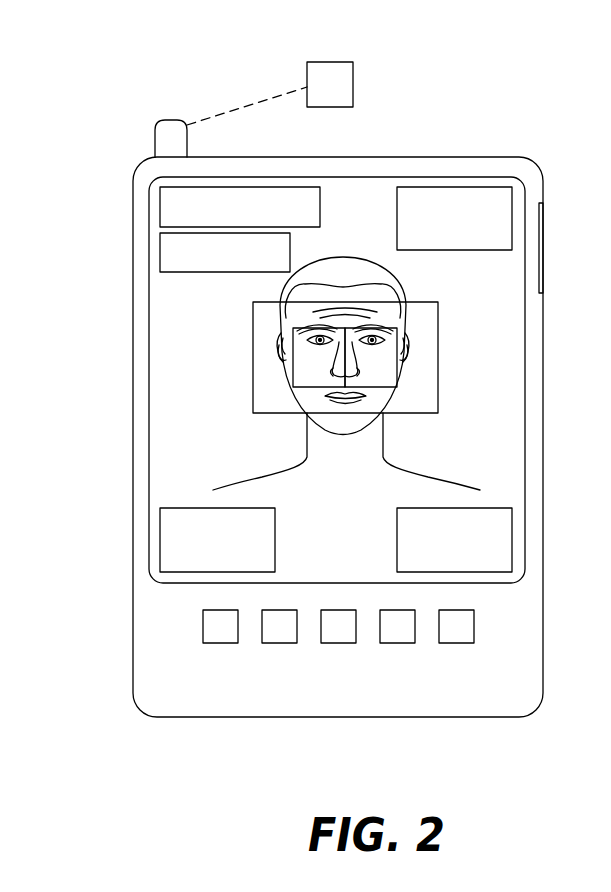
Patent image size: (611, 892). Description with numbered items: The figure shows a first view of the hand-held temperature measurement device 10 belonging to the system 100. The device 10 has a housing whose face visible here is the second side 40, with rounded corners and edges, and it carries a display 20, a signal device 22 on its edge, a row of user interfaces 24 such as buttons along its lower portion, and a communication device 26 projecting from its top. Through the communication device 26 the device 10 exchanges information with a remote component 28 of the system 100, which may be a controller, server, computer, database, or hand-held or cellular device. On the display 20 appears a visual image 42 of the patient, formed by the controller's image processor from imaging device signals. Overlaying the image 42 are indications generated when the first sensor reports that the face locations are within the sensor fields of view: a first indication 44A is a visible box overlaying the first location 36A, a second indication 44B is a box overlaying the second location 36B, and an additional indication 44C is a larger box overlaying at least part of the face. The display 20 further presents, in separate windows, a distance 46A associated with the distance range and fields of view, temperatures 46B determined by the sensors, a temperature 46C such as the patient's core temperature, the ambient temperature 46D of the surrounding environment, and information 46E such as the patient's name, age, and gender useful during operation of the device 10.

The system 100 is at (118, 85).
The temperature measurement device 10 is at (116, 738).
The display 20 is at (525, 448).
The signal device 22 is at (547, 240).
The user interface 24 is at (457, 643).
The communication device 26 is at (155, 133).
The remote component 28 is at (339, 93).
The first location 36A is at (398, 377).
The second location 36B is at (291, 377).
The second side 40 is at (512, 682).
The visual image 42 is at (181, 385).
The first indication 44A is at (382, 368).
The second indication 44B is at (308, 368).
The additional indication 44C is at (440, 397).
The distance 46A is at (323, 197).
The temperature 46B is at (397, 207).
The temperature 46C is at (180, 272).
The ambient temperature 46D is at (160, 538).
The information 46E is at (512, 532).